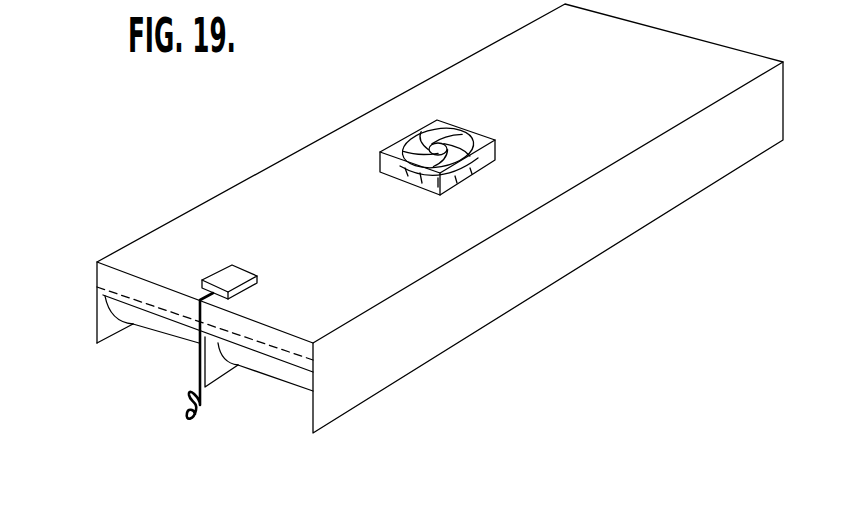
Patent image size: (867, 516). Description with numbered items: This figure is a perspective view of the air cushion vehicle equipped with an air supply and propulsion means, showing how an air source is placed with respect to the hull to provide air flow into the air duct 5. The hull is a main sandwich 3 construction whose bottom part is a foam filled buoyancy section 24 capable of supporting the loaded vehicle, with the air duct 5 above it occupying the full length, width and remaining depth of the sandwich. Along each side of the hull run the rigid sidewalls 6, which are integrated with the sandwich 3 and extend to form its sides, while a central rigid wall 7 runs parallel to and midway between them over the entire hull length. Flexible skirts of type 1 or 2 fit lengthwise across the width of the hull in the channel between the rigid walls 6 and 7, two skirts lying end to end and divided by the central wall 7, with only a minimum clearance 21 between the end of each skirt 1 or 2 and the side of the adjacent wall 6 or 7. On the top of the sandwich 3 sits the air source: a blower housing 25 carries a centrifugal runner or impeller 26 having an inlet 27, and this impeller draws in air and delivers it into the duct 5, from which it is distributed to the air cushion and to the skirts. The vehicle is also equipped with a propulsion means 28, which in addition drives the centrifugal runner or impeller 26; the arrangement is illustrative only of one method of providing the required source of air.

The flexible skirt type 1 is at (231, 404).
The flexible skirt type 2 is at (166, 323).
The main sandwich 3 is at (440, 173).
The air duct 5 is at (260, 337).
The sidewalls 6 is at (216, 367).
The central rigid wall 7 is at (221, 362).
The minimum clearance 21 is at (118, 320).
The foam filled buoyancy section 24 is at (97, 288).
The blower housing 25 is at (497, 148).
The centrifugal runner or impeller 26 is at (450, 182).
The inlet 27 is at (443, 135).
The propulsion means 28 is at (200, 292).